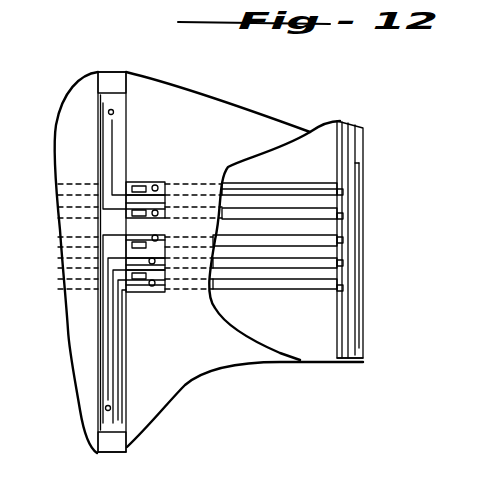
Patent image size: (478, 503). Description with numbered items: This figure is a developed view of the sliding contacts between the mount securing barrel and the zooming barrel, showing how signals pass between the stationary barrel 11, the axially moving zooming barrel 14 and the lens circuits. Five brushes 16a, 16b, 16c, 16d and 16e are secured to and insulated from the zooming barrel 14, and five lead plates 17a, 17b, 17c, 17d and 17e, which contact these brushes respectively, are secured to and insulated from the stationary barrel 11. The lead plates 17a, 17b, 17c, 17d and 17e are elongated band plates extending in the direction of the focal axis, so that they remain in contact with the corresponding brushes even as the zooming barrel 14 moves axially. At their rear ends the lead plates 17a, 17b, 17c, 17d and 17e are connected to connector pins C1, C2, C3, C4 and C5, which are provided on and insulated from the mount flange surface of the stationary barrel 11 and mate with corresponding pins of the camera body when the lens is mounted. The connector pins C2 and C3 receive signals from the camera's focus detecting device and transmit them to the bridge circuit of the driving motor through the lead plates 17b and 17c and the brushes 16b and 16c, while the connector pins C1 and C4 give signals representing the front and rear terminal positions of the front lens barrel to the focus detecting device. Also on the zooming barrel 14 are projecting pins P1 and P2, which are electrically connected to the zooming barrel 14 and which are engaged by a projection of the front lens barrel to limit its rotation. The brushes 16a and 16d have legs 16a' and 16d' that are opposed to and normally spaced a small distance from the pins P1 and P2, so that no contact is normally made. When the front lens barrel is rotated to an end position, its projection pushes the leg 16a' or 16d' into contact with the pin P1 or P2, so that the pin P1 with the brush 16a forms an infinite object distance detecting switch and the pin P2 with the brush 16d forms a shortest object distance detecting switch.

The zooming barrel 14 is at (80, 348).
The projecting pin P1 is at (114, 100).
The projecting pin P2 is at (104, 447).
The brush 16a is at (173, 128).
The leg 16a' is at (139, 112).
The brush 16b is at (158, 213).
The brush 16c is at (158, 240).
The brush 16d is at (169, 346).
The leg 16d' is at (162, 378).
The brush 16e is at (153, 284).
The lead plate 17a is at (273, 190).
The lead plate 17b is at (308, 213).
The lead plate 17c is at (268, 240).
The lead plate 17d is at (338, 358).
The lead plate 17e is at (318, 265).
The stationary barrel 11 is at (330, 333).
The connector pin C1 is at (341, 192).
The connector pin C2 is at (341, 216).
The connector pin C3 is at (341, 240).
The connector pin C4 is at (341, 264).
The connector pin C5 is at (340, 288).